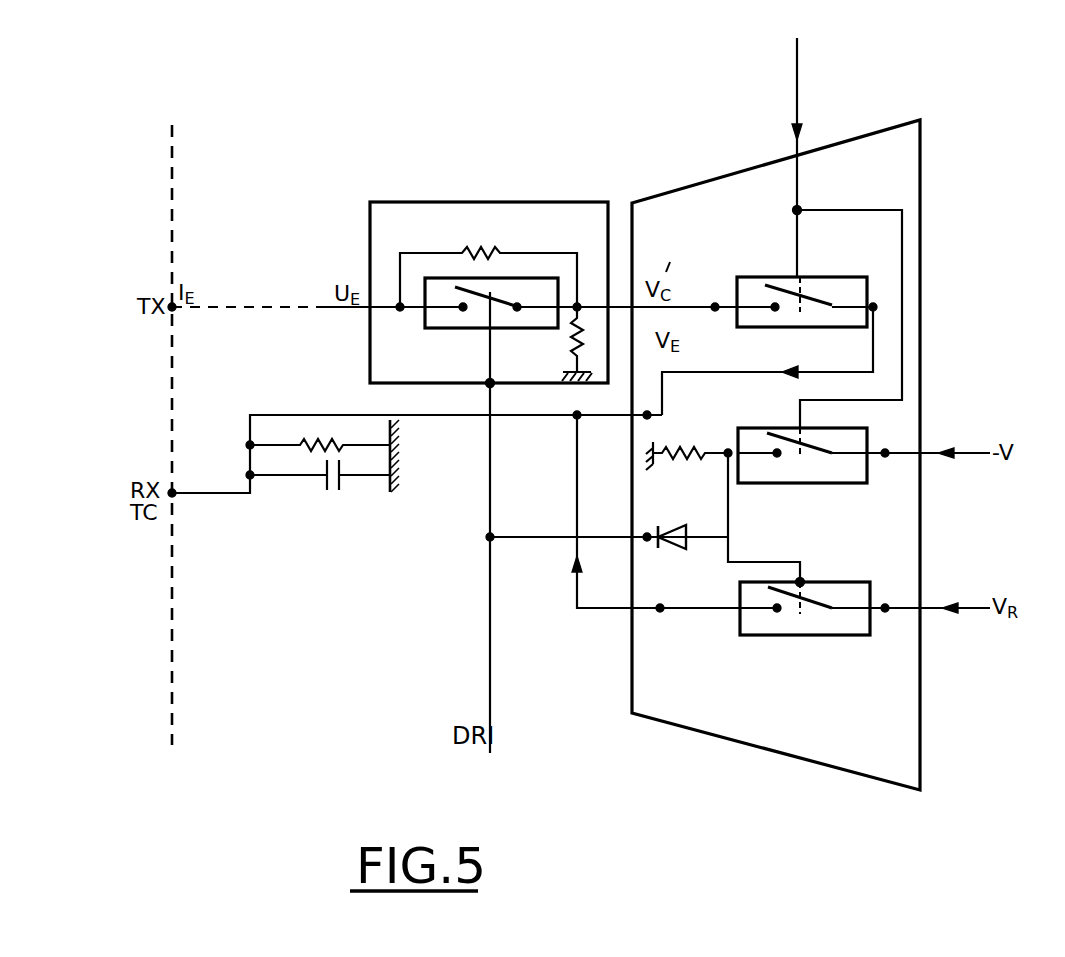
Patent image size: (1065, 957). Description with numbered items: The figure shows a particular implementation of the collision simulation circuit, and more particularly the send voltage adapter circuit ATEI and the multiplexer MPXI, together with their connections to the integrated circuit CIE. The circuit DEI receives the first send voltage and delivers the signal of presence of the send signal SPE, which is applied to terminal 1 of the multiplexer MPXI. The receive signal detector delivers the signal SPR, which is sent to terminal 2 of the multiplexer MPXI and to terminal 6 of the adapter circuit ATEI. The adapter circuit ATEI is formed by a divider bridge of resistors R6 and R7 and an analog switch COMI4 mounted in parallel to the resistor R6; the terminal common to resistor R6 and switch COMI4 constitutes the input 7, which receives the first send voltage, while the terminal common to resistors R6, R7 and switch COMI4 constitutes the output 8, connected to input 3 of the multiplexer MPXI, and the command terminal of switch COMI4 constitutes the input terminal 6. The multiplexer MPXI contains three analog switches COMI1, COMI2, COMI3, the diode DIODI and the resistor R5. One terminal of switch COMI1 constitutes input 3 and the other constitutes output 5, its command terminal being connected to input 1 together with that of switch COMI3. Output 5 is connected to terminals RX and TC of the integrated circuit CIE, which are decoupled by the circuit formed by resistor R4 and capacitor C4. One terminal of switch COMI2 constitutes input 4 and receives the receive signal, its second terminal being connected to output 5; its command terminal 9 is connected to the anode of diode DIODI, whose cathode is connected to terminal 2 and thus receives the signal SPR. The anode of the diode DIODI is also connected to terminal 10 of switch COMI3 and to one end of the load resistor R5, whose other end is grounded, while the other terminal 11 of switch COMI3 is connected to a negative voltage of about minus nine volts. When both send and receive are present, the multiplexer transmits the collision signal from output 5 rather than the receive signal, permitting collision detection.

The terminal of multiplexer 1 is at (790, 198).
The terminal of multiplexer 2 is at (647, 541).
The input of multiplexer 3 is at (721, 291).
The input of multiplexer 4 is at (885, 604).
The output of multiplexer 5 is at (873, 303).
The input terminal of adapter circuit 6 is at (497, 373).
The input of adapter circuit 7 is at (402, 291).
The output of adapter circuit 8 is at (577, 303).
The command terminal of switch COMI2 9 is at (806, 564).
The terminal of switch COMI3 10 is at (730, 435).
The terminal of switch COMI3 11 is at (885, 457).
The integrated circuit CIE is at (172, 178).
The send voltage adapter circuit ATEI is at (430, 202).
The multiplexer MPXI is at (920, 360).
The analog switch COMI1 is at (790, 277).
The analog switch COMI2 is at (818, 635).
The analog switch COMI3 is at (811, 479).
The analog switch COMI4 is at (488, 330).
The resistor R4 is at (304, 442).
The load resistor R5 is at (687, 443).
The resistor R6 is at (488, 265).
The resistor R7 is at (585, 344).
The capacitor C4 is at (318, 494).
The diode DIODI is at (643, 517).
The send signal detector circuit DEI is at (797, 70).
The signal of presence of send signal SPE is at (797, 118).
The receive presence signal SPR is at (490, 598).